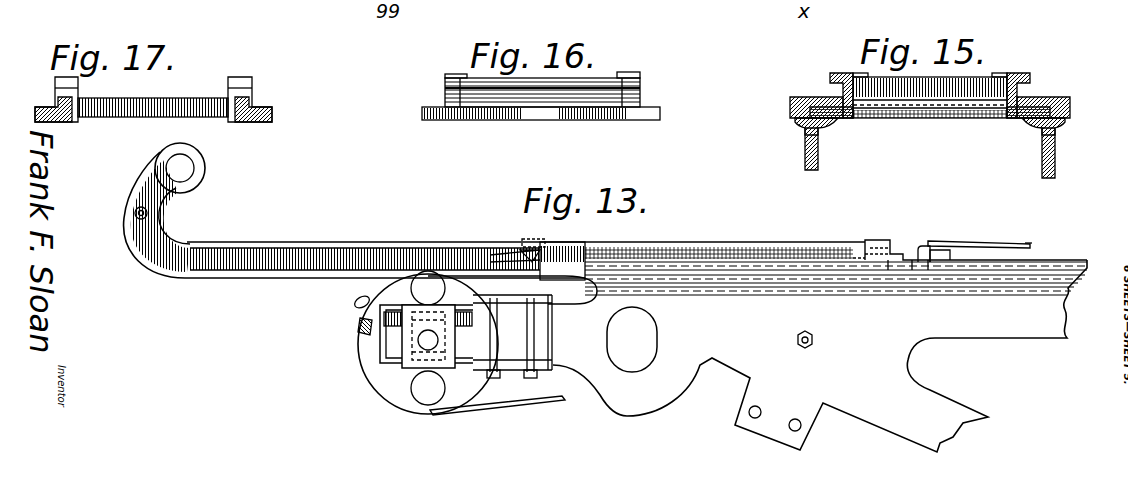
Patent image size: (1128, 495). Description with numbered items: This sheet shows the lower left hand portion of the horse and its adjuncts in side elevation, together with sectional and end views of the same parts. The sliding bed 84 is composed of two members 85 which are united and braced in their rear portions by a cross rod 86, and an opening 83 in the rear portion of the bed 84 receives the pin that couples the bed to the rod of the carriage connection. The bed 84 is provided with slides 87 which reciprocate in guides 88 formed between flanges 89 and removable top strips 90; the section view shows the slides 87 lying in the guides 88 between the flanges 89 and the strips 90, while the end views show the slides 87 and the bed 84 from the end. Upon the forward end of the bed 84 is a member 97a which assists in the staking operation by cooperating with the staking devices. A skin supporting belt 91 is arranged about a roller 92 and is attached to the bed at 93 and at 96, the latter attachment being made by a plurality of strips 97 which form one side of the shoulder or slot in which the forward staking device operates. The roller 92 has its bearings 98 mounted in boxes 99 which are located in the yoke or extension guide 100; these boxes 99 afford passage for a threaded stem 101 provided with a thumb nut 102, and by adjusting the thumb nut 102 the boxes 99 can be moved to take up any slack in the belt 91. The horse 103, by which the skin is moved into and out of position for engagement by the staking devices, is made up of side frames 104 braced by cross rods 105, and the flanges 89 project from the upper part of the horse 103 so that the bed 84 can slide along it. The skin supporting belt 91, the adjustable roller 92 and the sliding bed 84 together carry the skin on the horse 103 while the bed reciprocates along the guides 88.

In FIG. 13, the opening 83 is at (186, 168).
In FIG. 17, the sliding bed 84 is at (153, 96).
In FIG. 16, the sliding bed 84 is at (535, 79).
In FIG. 15, the sliding bed 84 is at (875, 77).
In FIG. 13, the sliding bed 84 is at (525, 244).
In FIG. 13, the members 85 is at (240, 246).
In FIG. 13, the cross rod 86 is at (135, 213).
In FIG. 17, the slides 87 is at (50, 112).
In FIG. 16, the slides 87 is at (422, 115).
In FIG. 15, the slides 87 is at (790, 113).
In FIG. 13, the slides 87 is at (562, 271).
In FIG. 15, the guides 88 is at (815, 126).
In FIG. 15, the flanges 89 is at (838, 120).
In FIG. 15, the removable top strips 90 is at (800, 97).
In FIG. 13, the removable top strips 90 is at (780, 265).
In FIG. 13, the skin supporting belt 91 is at (545, 407).
In FIG. 13, the roller 92 is at (397, 387).
In FIG. 13, the belt attachment point 93 is at (510, 258).
In FIG. 13, the belt attachment point 96 is at (928, 243).
In FIG. 13, the strips 97 is at (917, 248).
In FIG. 13, the staking member 97a is at (870, 241).
In FIG. 13, the bearings 98 is at (425, 340).
In FIG. 13, the boxes 99 is at (415, 328).
In FIG. 13, the yoke or extension guide 100 is at (392, 300).
In FIG. 13, the threaded stem 101 is at (360, 328).
In FIG. 13, the thumb nut 102 is at (356, 304).
In FIG. 13, the horse 103 is at (967, 354).
In FIG. 15, the side frames 104 is at (805, 152).
In FIG. 13, the side frames 104 is at (820, 356).
In FIG. 13, the cross rods 105 is at (813, 341).